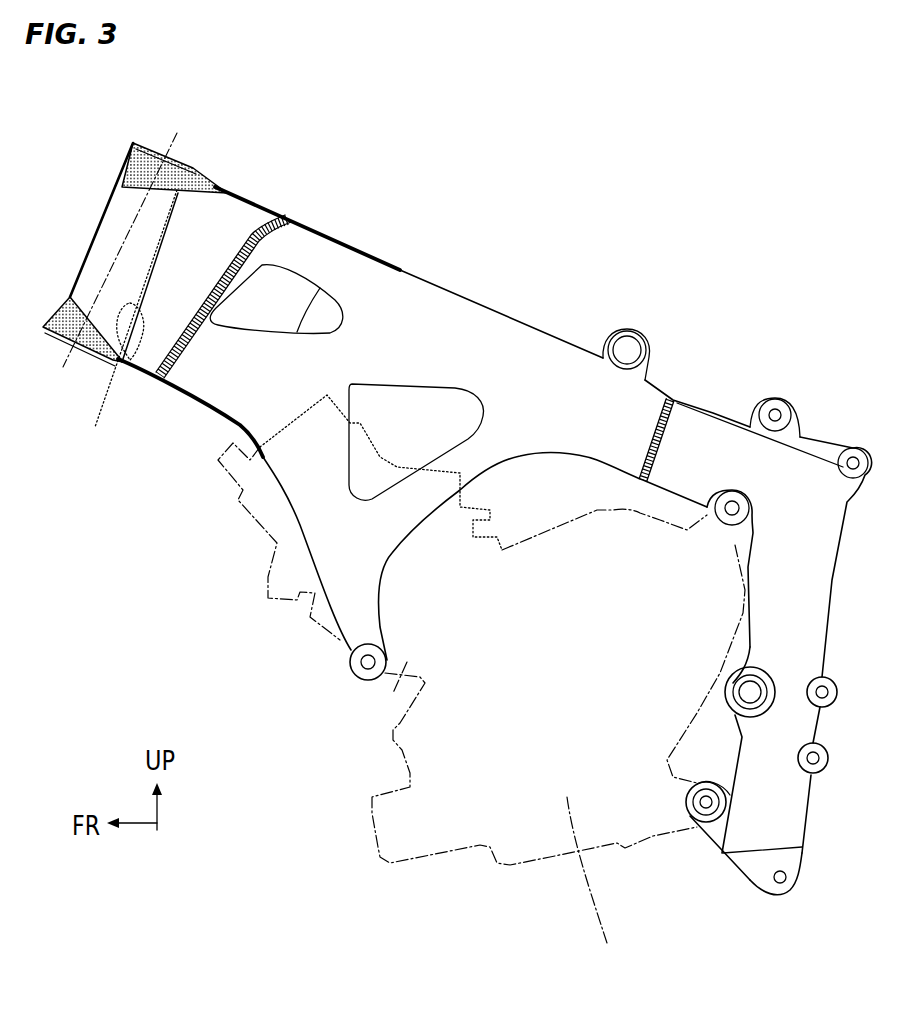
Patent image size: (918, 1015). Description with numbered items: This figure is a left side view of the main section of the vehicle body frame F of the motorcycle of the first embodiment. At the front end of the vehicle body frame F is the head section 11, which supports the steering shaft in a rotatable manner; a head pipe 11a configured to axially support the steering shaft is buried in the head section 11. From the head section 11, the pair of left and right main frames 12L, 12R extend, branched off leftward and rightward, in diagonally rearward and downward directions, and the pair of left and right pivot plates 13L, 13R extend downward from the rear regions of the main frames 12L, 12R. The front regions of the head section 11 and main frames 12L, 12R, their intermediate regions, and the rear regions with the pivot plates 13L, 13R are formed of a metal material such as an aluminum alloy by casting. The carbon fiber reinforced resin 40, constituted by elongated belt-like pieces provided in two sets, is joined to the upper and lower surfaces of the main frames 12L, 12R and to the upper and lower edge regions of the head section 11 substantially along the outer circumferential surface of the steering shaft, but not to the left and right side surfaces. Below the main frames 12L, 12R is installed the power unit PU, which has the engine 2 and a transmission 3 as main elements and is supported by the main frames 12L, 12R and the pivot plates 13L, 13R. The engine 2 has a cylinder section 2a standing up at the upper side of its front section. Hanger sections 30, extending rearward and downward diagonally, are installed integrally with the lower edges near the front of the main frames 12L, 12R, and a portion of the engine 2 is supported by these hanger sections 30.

The vehicle body frame F is at (577, 304).
The head section 11 is at (103, 220).
The head pipe 11a is at (122, 324).
The left main frame 12L is at (418, 302).
The right main frame 12R is at (501, 257).
The left pivot plate 13L is at (780, 592).
The right pivot plate 13R is at (715, 751).
The carbon fiber reinforced resin 40 is at (253, 200).
The hanger section 30 is at (350, 647).
The engine 2 is at (397, 693).
The cylinder section 2a is at (287, 565).
The power unit PU is at (368, 845).
The transmission 3 is at (591, 889).